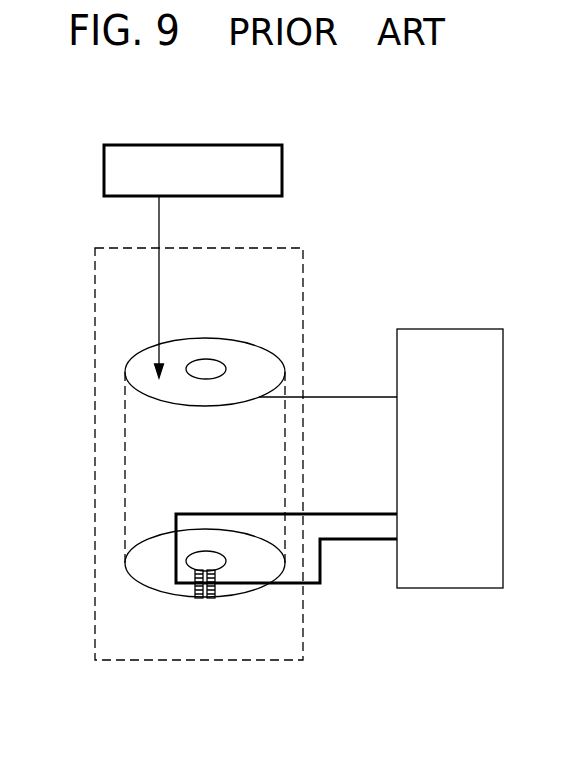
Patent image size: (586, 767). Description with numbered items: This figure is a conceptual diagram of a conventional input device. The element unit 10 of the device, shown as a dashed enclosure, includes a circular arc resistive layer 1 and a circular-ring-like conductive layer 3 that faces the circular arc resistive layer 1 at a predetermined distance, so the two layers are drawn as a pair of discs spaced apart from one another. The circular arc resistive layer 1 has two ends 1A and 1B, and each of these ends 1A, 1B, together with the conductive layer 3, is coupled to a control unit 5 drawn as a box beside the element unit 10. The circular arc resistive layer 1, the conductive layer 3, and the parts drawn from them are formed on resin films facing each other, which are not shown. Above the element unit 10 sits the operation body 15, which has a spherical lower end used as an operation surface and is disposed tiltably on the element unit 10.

The operation body 15 is at (282, 164).
The element unit 10 is at (95, 412).
The conductive layer 3 is at (182, 338).
The control unit 5 is at (448, 329).
The circular arc resistive layer 1 is at (145, 558).
The end of circular arc resistive layer 1A is at (198, 598).
The end of circular arc resistive layer 1B is at (213, 598).